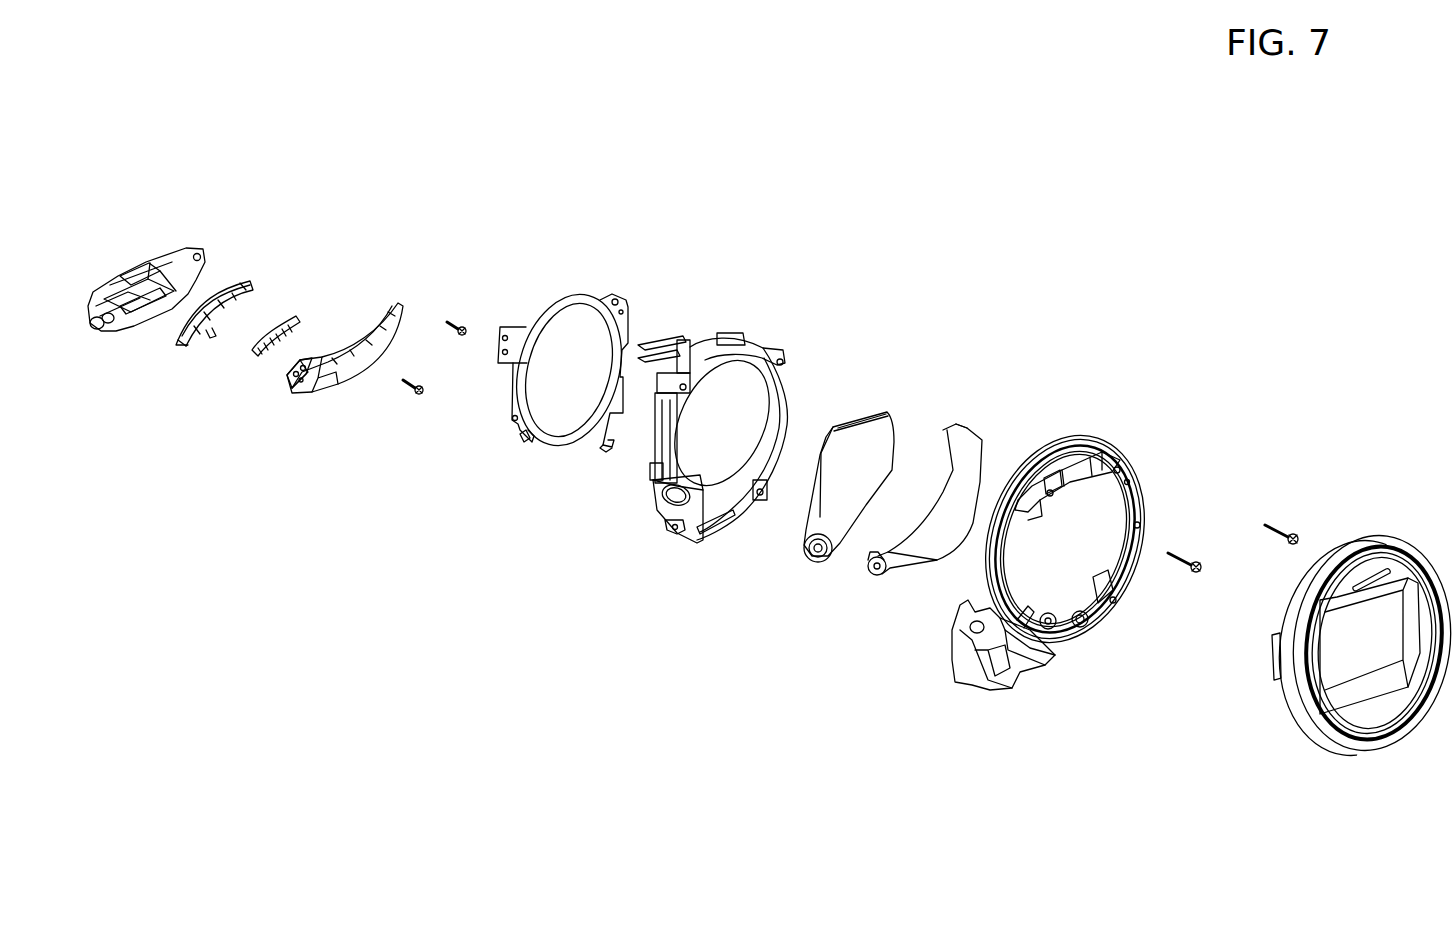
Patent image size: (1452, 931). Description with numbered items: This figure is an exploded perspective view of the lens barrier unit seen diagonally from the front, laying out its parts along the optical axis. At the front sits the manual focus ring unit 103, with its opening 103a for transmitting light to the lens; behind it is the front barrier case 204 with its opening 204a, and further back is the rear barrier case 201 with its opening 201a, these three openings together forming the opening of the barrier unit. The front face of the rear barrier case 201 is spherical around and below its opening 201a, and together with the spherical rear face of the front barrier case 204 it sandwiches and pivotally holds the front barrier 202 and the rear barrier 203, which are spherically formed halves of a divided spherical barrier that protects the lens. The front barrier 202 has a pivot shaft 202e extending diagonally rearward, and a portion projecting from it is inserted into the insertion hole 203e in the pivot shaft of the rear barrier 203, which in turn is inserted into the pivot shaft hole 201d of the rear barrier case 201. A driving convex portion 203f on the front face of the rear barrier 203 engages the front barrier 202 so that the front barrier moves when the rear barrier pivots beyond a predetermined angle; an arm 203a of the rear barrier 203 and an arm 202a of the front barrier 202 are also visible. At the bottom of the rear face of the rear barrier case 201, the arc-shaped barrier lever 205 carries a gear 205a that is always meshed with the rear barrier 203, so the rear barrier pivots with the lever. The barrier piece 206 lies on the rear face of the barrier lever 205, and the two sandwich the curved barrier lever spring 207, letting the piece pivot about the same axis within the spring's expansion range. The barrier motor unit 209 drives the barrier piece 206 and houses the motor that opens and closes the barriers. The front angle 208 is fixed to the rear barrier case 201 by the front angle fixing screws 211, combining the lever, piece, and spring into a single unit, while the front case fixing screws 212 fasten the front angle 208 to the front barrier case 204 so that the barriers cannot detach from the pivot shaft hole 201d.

The manual focus ring unit 103 is at (1368, 527).
The opening 103a is at (1357, 653).
The rear barrier case 201 is at (669, 343).
The opening 201a is at (730, 403).
The pivot shaft hole 201d is at (675, 493).
The front barrier 202 is at (954, 421).
The arm of first lever 202a is at (967, 453).
The pivot shaft 202e is at (875, 570).
The rear barrier 203 is at (839, 419).
The arm of second lever 203a is at (868, 443).
The insertion hole 203e is at (817, 562).
The driving convex portion 203f is at (812, 552).
The front barrier case 204 is at (1083, 431).
The opening 204a is at (1073, 550).
The barrier lever 205 is at (376, 330).
The gear 205a is at (300, 384).
The barrier piece 206 is at (243, 281).
The barrier lever spring 207 is at (270, 349).
The front angle 208 is at (562, 297).
The barrier motor unit 209 is at (162, 257).
The front angle fixing screws 211 is at (1195, 560).
The front case fixing screws 212 is at (405, 378).